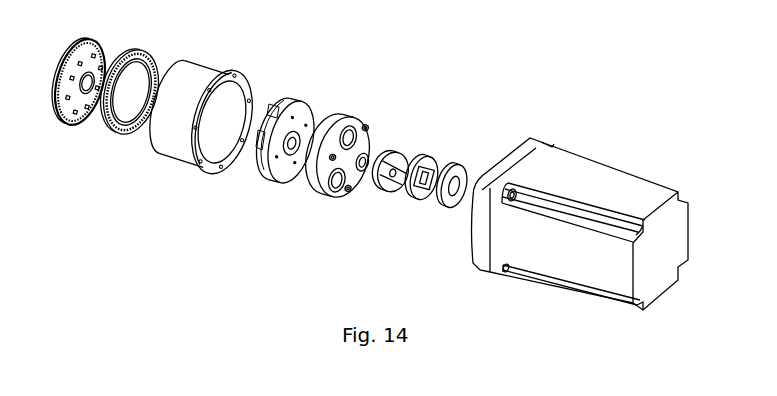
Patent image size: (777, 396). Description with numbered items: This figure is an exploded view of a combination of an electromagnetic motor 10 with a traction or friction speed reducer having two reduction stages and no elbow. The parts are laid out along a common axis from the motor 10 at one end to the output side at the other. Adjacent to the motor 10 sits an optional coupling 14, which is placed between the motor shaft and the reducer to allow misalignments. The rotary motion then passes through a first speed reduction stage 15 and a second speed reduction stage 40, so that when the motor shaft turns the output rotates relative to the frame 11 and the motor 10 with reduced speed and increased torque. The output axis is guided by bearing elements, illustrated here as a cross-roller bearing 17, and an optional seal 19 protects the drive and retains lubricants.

The electromagnetic motor 10 is at (583, 172).
The frame 11 is at (210, 69).
The coupling 14 is at (432, 242).
The first speed reduction stage 15 is at (312, 223).
The cross-roller bearing 17 is at (121, 148).
The seal 19 is at (87, 33).
The second speed reduction stage 40 is at (248, 198).